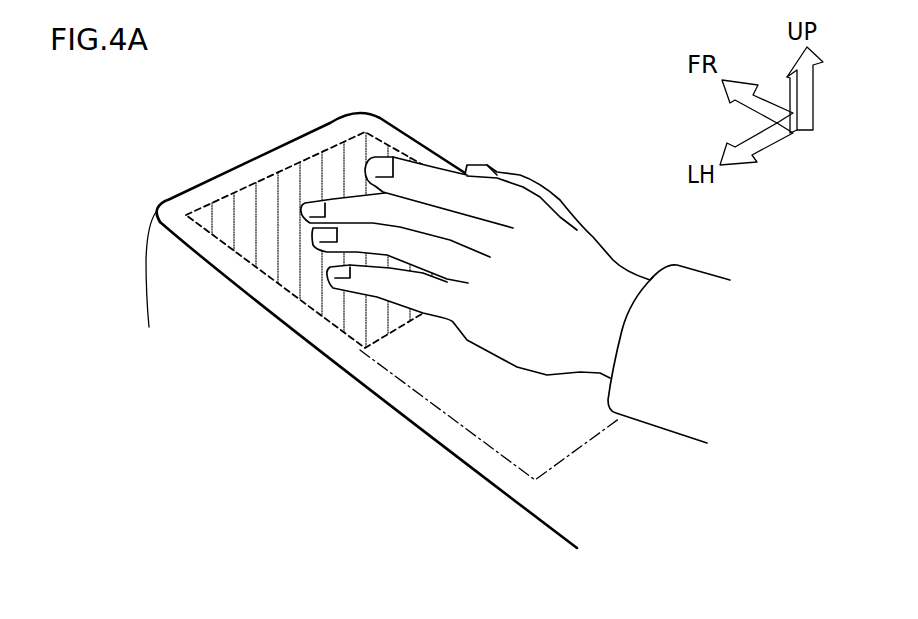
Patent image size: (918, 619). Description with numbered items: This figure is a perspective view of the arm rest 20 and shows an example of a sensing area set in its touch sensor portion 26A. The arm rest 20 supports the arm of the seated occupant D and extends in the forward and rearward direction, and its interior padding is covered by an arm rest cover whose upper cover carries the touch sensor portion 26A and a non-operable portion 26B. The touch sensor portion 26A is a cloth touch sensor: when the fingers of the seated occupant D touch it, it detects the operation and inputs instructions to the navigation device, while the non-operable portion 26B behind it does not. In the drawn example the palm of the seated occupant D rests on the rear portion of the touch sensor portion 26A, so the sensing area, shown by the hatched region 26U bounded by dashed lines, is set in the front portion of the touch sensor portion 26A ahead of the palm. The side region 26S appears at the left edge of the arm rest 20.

The arm rest 20 is at (322, 122).
The upper operation region 26U is at (348, 127).
The side face 26S is at (170, 272).
The touch sensor portion 26A is at (450, 383).
The non-operable portion 26B is at (577, 498).
The seated occupant D is at (703, 270).